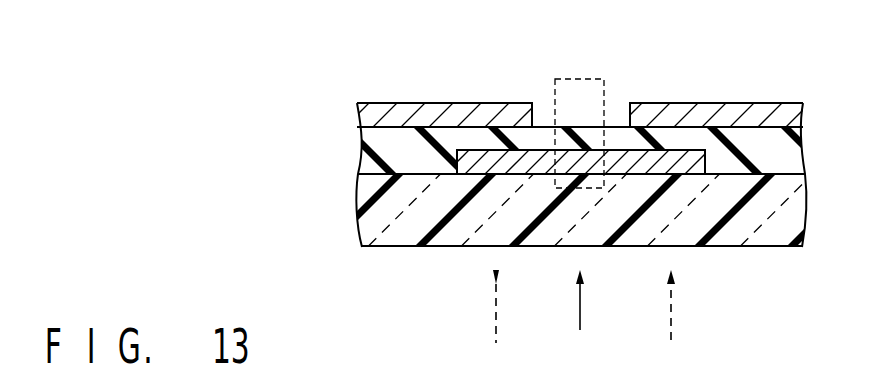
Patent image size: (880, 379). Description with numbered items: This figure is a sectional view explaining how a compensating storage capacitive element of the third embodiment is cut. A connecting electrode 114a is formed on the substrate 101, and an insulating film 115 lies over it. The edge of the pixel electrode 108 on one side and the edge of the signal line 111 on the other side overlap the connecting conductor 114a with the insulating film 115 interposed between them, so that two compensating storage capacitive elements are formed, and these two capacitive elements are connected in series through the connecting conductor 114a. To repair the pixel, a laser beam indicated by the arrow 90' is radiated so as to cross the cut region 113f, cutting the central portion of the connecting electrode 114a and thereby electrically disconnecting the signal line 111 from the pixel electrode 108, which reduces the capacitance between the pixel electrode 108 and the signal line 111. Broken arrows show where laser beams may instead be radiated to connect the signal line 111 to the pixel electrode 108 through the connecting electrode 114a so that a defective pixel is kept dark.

The substrate 101 is at (793, 218).
The pixel electrode 108 is at (436, 103).
The signal line 111 is at (800, 115).
The cut region 113f is at (593, 78).
The connecting electrode 114a is at (626, 175).
The insulating film 115 is at (794, 157).
The arrow indicating laser beam 90' is at (599, 311).